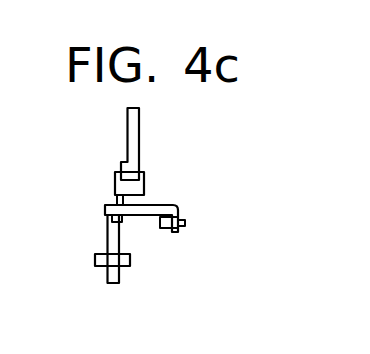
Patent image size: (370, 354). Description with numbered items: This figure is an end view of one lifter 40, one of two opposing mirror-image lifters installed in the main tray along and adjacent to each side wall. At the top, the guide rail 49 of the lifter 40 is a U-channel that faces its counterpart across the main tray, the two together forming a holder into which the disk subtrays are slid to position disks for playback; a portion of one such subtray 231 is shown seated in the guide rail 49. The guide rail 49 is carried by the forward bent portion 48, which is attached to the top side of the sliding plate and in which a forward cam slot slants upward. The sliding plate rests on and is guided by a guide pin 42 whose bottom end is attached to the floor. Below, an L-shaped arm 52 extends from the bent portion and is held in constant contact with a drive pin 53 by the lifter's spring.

The support bar 231 is at (127, 144).
The guide rail 49 is at (115, 181).
The forward bent portion 48 is at (151, 205).
The guide pin 42 is at (185, 223).
The L-shaped arm 52 is at (112, 284).
The drive pin 53 is at (95, 262).
The lifter 40 is at (202, 206).